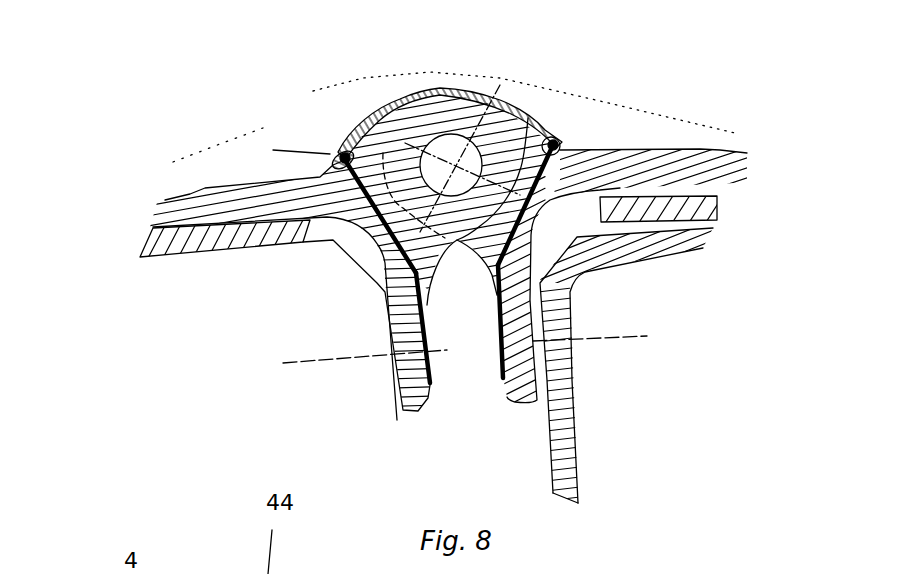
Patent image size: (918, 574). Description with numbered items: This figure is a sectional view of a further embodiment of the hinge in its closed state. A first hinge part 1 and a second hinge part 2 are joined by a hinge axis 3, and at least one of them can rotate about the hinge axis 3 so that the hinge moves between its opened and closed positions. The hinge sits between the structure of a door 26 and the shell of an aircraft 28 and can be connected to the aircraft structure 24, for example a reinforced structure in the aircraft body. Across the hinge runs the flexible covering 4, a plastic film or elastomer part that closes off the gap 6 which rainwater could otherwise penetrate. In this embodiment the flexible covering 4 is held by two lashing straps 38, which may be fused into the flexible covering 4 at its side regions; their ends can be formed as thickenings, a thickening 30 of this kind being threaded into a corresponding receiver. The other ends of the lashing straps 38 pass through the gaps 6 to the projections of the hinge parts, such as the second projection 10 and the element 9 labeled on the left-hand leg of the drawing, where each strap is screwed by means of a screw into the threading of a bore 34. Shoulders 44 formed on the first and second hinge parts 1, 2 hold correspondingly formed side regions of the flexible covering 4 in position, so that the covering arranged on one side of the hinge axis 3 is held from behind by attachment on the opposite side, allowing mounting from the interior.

The first hinge part 1 is at (222, 182).
The second hinge part 2 is at (727, 155).
The hinge axis 3 is at (505, 85).
The flexible covering 4 is at (356, 124).
The gap 6 is at (533, 155).
The left pipe 9 is at (405, 417).
The second projection 10 is at (520, 405).
The aircraft structure 24 is at (580, 427).
The structure of a door 26 is at (143, 253).
The shell of an aircraft 28 is at (727, 198).
The thickening 30 is at (483, 338).
The bore 34 is at (497, 352).
The lashing strap 38 is at (454, 117).
The shoulder 44 is at (368, 160).